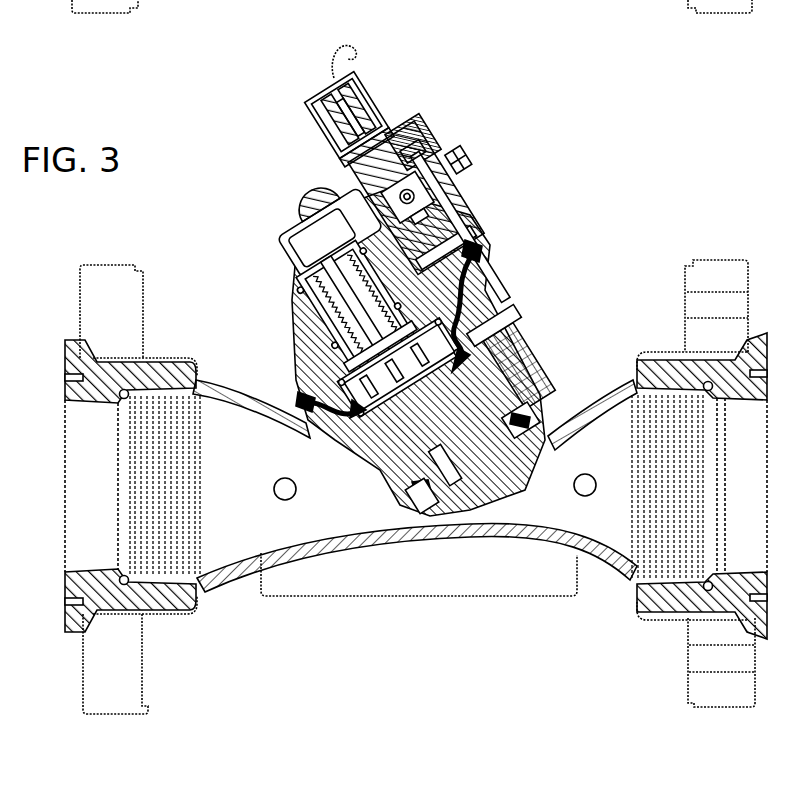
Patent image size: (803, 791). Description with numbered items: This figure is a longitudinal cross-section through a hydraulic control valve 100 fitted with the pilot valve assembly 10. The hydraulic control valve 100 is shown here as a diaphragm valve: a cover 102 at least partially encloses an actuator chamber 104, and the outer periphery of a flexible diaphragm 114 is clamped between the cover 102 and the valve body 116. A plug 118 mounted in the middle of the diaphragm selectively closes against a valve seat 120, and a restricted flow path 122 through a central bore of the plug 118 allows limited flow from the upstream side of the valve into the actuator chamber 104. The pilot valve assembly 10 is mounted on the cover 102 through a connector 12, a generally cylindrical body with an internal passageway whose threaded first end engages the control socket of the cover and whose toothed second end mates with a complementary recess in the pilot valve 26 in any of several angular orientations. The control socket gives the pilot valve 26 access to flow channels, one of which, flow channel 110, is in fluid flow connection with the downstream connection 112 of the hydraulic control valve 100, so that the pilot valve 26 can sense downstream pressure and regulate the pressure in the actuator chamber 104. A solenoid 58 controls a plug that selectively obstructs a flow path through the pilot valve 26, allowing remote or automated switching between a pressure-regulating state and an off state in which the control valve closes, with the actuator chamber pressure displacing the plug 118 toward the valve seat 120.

The pilot valve assembly 10 is at (464, 95).
The connector 12 is at (460, 230).
The pilot valve 26 is at (362, 198).
The solenoid 58 is at (330, 114).
The hydraulic control valve 100 is at (298, 629).
The cover 102 is at (308, 347).
The actuator chamber 104 is at (312, 338).
The flow channel 110 is at (483, 303).
The downstream connection 112 is at (323, 433).
The flexible diaphragm 114 is at (473, 323).
The valve body 116 is at (440, 540).
The plug 118 is at (507, 387).
The valve seat 120 is at (422, 500).
The restricted flow path 122 is at (432, 416).